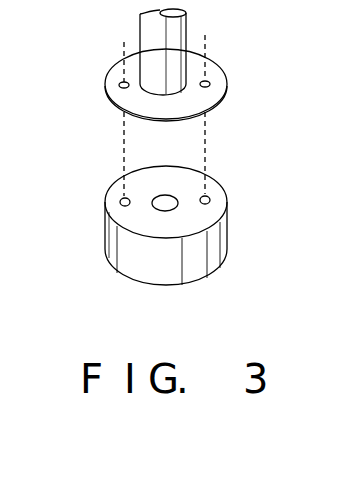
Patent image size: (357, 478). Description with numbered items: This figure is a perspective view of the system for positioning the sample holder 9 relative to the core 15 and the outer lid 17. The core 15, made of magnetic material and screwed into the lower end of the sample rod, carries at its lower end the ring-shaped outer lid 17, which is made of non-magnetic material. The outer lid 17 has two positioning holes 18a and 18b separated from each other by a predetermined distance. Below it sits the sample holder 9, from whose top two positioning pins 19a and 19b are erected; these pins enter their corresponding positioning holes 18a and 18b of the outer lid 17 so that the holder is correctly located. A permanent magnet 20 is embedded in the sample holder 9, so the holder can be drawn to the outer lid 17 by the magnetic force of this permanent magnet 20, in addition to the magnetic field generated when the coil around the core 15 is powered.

The sample holder 9 is at (228, 237).
The core 15 is at (140, 22).
The outer lid 17 is at (220, 70).
The positioning hole 18a is at (118, 86).
The positioning hole 18b is at (211, 85).
The positioning pin 19a is at (119, 202).
The positioning pin 19b is at (211, 200).
The permanent magnet 20 is at (178, 202).